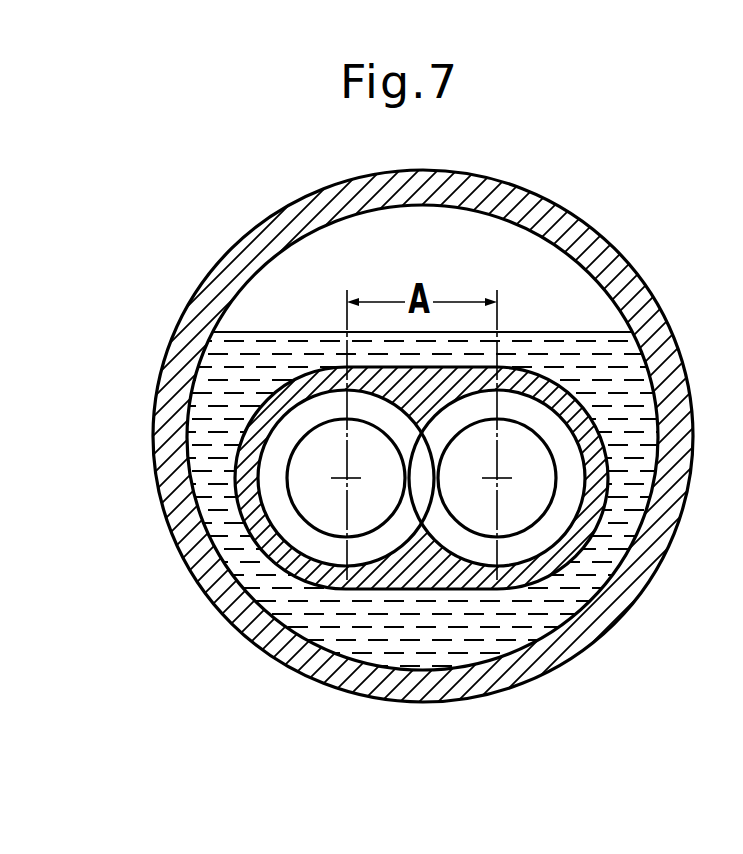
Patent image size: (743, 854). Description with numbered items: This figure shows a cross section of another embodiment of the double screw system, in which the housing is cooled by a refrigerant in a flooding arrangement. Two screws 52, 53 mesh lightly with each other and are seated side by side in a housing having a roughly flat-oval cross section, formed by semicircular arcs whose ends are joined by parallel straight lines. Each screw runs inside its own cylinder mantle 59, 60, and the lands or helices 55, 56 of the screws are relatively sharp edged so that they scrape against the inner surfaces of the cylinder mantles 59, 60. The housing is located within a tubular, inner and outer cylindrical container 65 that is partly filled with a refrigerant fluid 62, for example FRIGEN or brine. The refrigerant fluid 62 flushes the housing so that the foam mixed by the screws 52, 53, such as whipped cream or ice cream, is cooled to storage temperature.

The cylindrical container 65 is at (305, 658).
The screw 52 is at (230, 590).
The refrigerant fluid 62 is at (510, 630).
The helix 56 is at (568, 503).
The cylinder mantle 59 is at (275, 453).
The cylinder mantle 60 is at (562, 452).
The helix 55 is at (313, 505).
The screw 53 is at (518, 518).